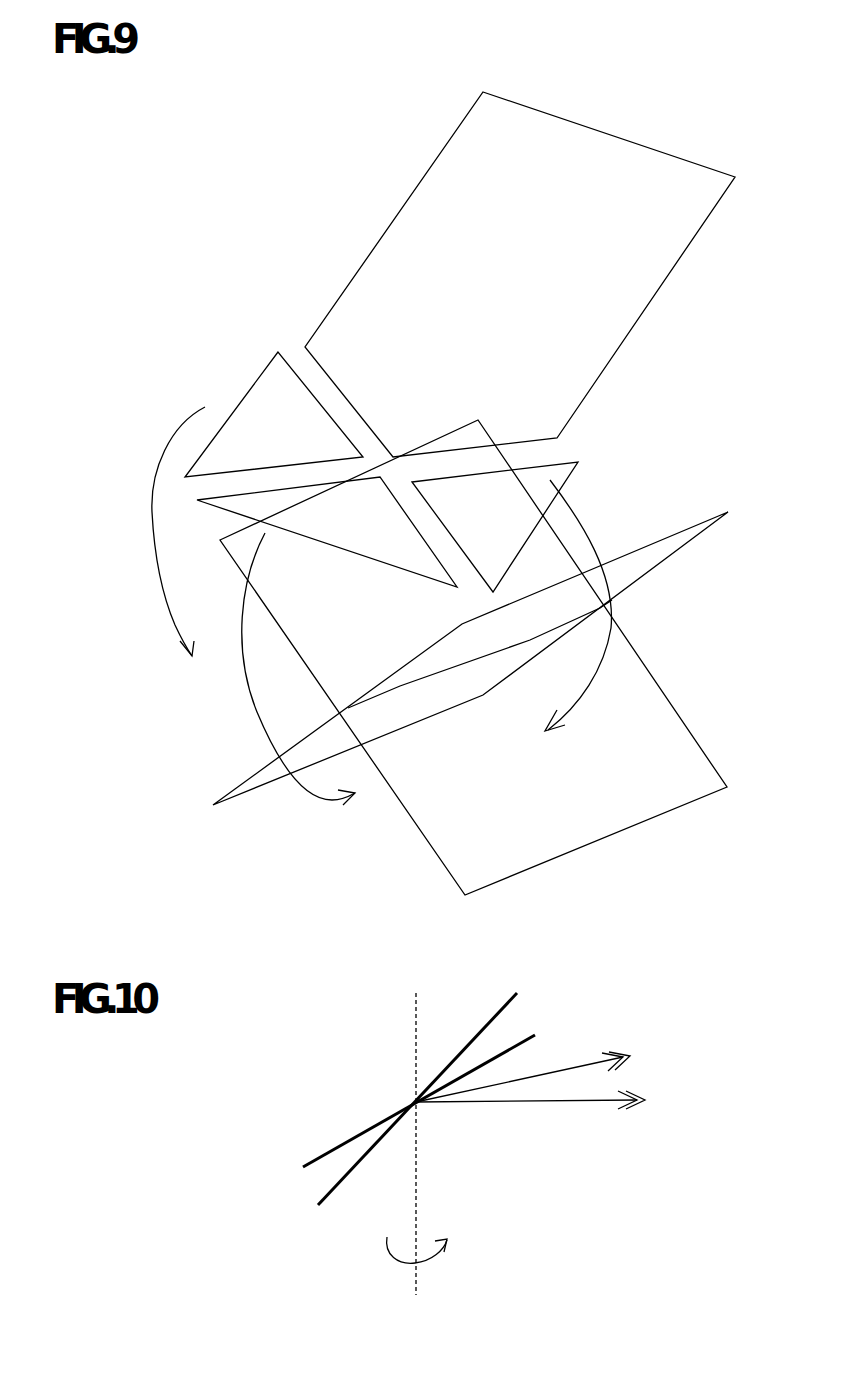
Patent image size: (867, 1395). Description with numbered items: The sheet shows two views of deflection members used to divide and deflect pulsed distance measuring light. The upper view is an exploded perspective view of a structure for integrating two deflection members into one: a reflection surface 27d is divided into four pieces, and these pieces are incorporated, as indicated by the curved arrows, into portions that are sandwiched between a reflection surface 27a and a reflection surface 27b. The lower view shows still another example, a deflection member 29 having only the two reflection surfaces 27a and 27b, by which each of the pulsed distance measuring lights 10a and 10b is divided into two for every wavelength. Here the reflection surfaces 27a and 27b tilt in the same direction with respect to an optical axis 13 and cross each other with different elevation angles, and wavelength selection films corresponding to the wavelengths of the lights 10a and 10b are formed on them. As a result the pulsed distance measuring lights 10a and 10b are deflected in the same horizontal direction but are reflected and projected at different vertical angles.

In FIG. 9, the reflection surface 27d is at (472, 152).
In FIG. 9, the reflection surface 27a is at (640, 802).
In FIG. 10, the reflection surface 27a is at (338, 1198).
In FIG. 9, the reflection surface 27b is at (650, 558).
In FIG. 10, the reflection surface 27b is at (327, 1155).
In FIG. 10, the deflection member 29 is at (343, 1103).
In FIG. 10, the pulsed distance measuring light 10a is at (563, 1105).
In FIG. 10, the pulsed distance measuring light 10b is at (583, 1062).
In FIG. 10, the optical axis 13 is at (420, 1215).